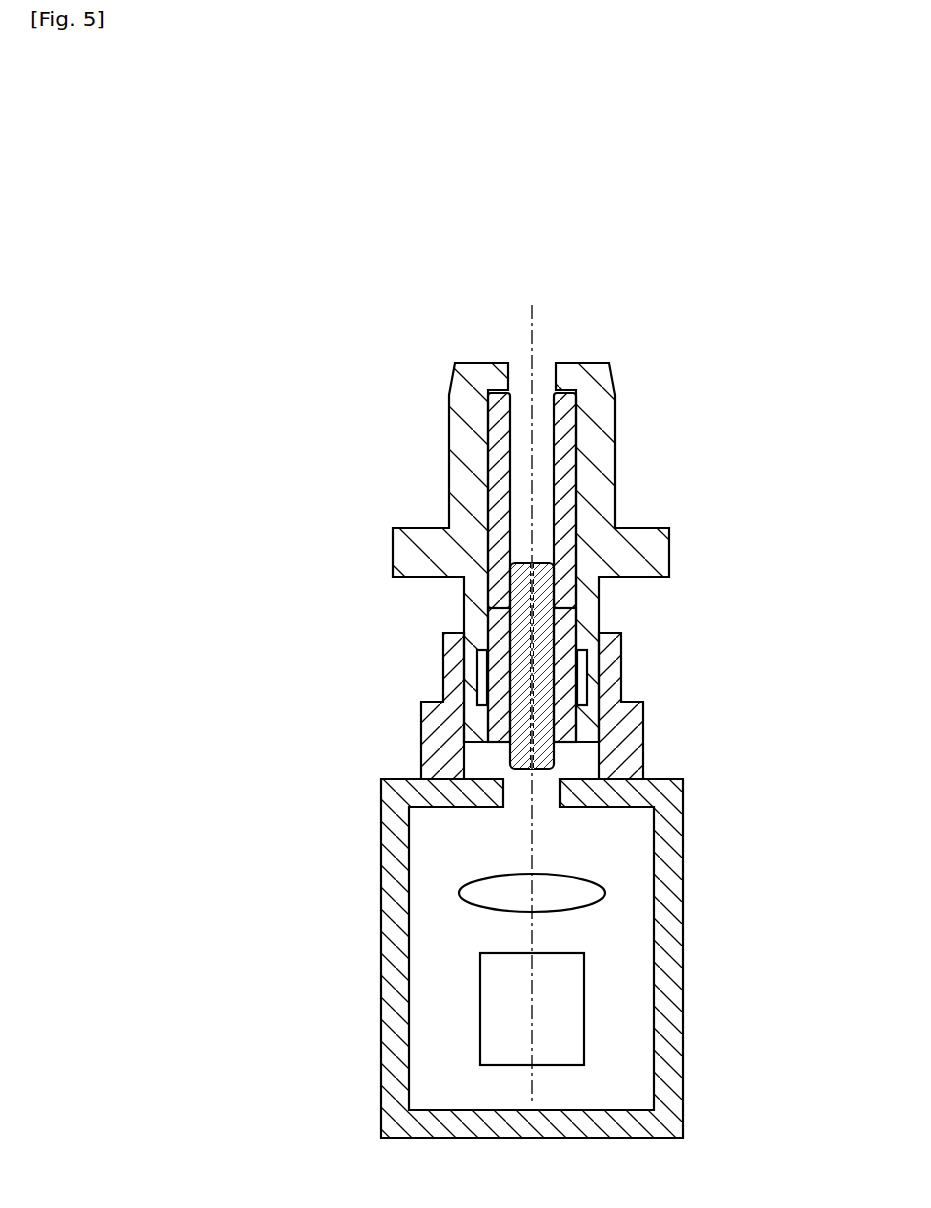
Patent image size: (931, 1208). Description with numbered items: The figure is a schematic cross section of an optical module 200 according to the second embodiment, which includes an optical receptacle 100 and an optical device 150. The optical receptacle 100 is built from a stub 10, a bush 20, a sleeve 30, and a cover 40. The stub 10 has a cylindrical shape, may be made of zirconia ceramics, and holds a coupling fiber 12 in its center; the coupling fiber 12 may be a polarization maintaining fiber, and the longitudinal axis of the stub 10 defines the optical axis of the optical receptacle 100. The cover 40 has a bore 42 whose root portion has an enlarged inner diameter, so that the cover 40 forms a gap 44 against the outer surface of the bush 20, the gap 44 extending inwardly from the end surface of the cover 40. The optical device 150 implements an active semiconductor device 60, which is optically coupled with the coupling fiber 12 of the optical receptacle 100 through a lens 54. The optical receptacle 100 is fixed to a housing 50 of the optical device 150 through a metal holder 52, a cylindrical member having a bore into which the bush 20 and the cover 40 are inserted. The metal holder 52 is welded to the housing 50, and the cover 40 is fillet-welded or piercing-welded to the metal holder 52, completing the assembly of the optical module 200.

The stub 10 is at (517, 598).
The coupling fiber 12 is at (530, 628).
The bush 20 is at (568, 629).
The sleeve 30 is at (566, 508).
The cover 40 is at (615, 462).
The bore 42 is at (525, 417).
The gap 44 is at (580, 680).
The housing 50 is at (673, 847).
The metal holder 52 is at (632, 737).
The lens 54 is at (462, 893).
The active semiconductor device 60 is at (487, 1000).
The optical receptacle 100 is at (372, 497).
The optical device 150 is at (343, 782).
The optical module 200 is at (682, 398).